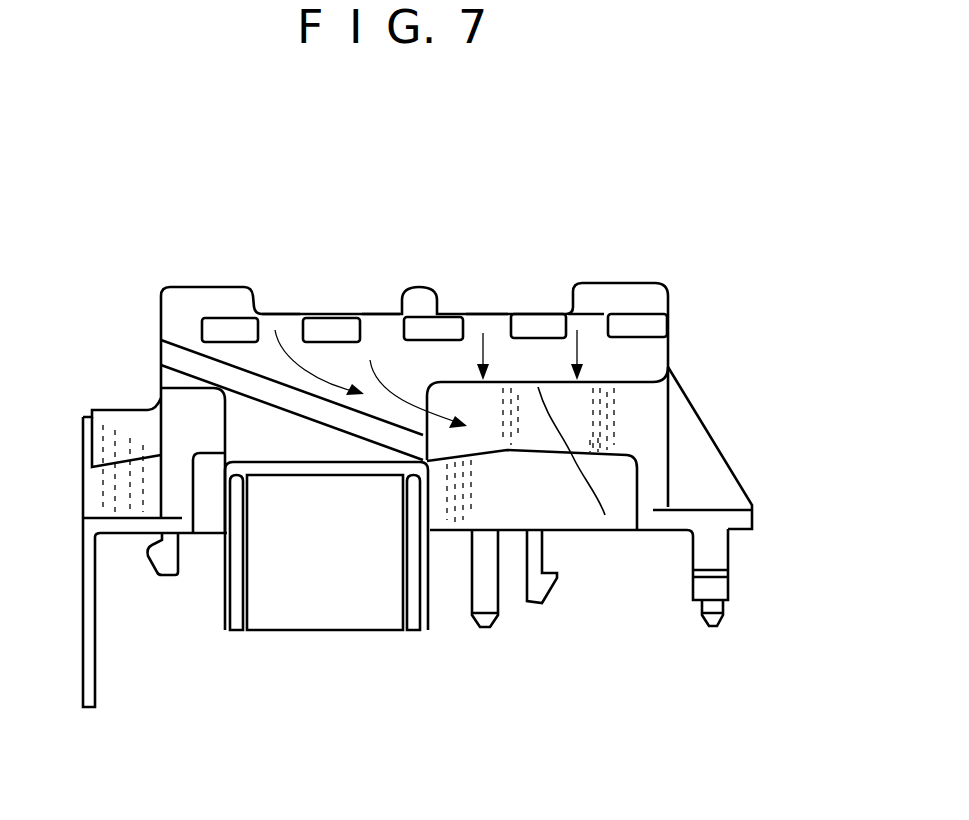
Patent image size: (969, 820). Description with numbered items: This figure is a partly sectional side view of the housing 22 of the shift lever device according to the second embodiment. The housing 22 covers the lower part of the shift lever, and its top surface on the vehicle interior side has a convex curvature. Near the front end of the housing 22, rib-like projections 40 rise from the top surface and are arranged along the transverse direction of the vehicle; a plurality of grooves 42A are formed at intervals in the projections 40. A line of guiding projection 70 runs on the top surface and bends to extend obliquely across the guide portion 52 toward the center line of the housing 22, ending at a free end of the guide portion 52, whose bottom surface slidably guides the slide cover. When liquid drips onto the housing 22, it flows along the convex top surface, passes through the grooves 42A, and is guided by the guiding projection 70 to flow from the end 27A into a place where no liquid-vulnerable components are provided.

The housing 22 is at (730, 435).
The projection 40 is at (222, 333).
The groove 42A is at (260, 333).
The guiding projection 70 is at (178, 360).
The guide portion 52 is at (312, 443).
The end 27A is at (605, 515).